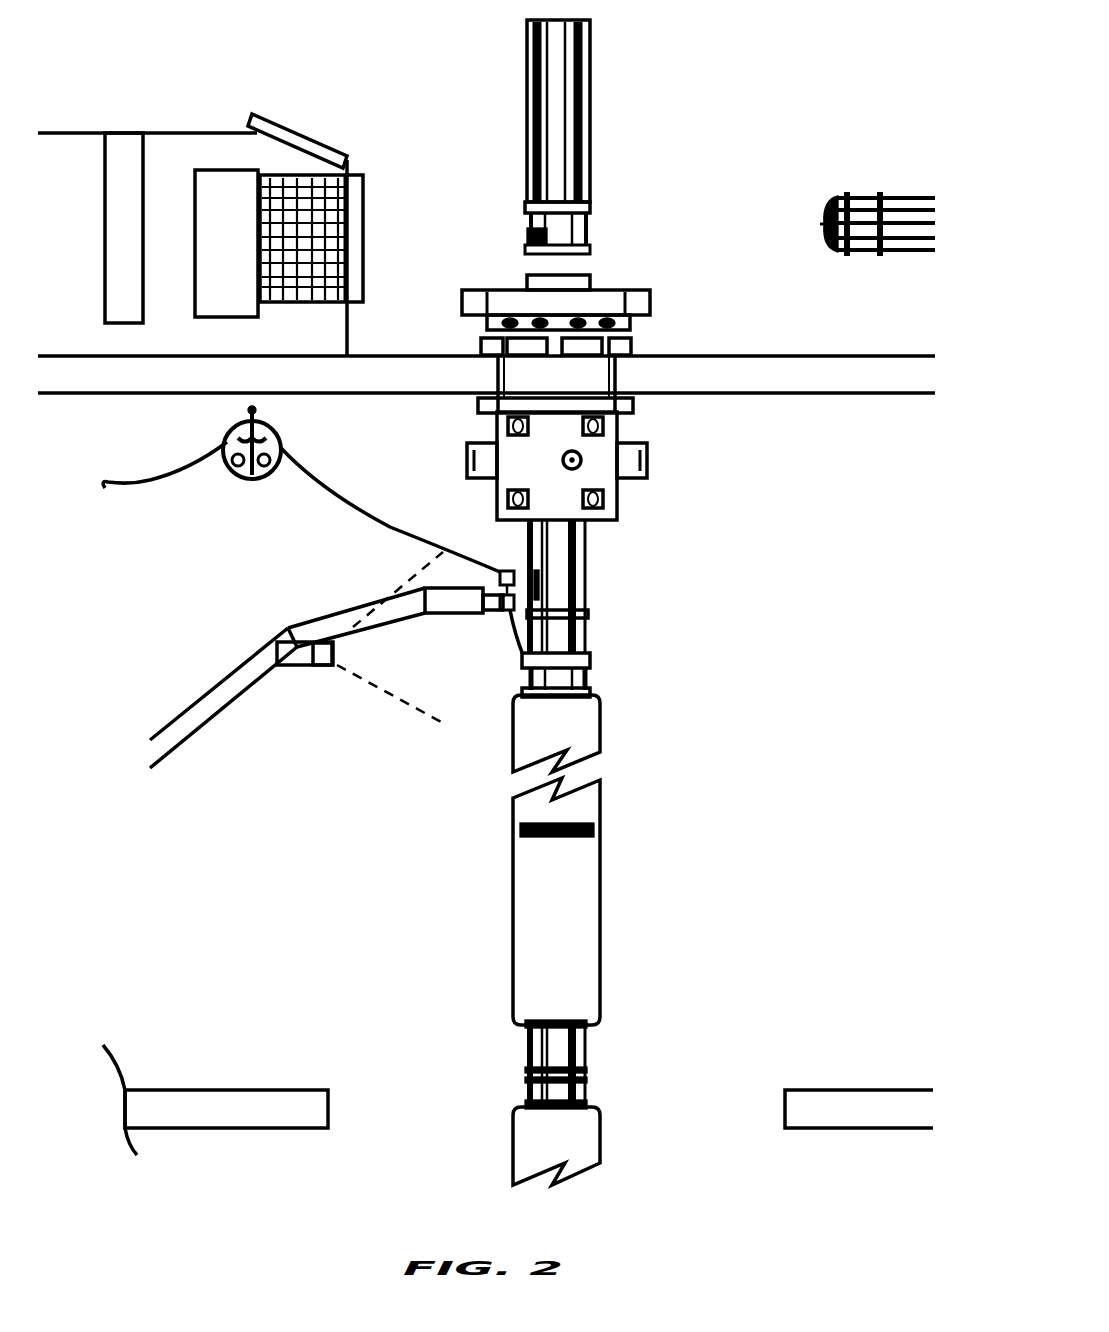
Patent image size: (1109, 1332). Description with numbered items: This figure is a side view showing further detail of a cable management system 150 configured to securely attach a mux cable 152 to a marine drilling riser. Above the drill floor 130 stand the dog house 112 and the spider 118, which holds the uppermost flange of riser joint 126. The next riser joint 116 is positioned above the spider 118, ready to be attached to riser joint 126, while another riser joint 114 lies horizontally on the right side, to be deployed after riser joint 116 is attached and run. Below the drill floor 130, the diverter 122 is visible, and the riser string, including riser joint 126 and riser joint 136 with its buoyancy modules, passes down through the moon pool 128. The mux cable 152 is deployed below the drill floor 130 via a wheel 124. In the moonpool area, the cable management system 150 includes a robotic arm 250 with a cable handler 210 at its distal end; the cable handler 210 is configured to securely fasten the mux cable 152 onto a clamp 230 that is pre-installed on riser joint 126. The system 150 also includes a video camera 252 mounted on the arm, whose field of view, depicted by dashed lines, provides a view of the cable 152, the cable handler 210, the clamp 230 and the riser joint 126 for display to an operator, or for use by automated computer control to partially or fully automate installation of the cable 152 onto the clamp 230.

The dog house 112 is at (175, 130).
The riser joint 114 is at (858, 165).
The riser joint 116 is at (588, 124).
The spider 118 is at (652, 306).
The diverter 122 is at (617, 478).
The wheel 124 is at (230, 488).
The riser joint 126 is at (583, 590).
The moon pool 128 is at (680, 1068).
The drill floor 130 is at (785, 383).
The riser joint 136 is at (600, 733).
The cable management system 150 is at (228, 648).
The mux cable 152 is at (357, 510).
The cable handler 210 is at (508, 558).
The clamp 230 is at (553, 582).
The robotic arm 250 is at (322, 630).
The video camera 252 is at (327, 665).